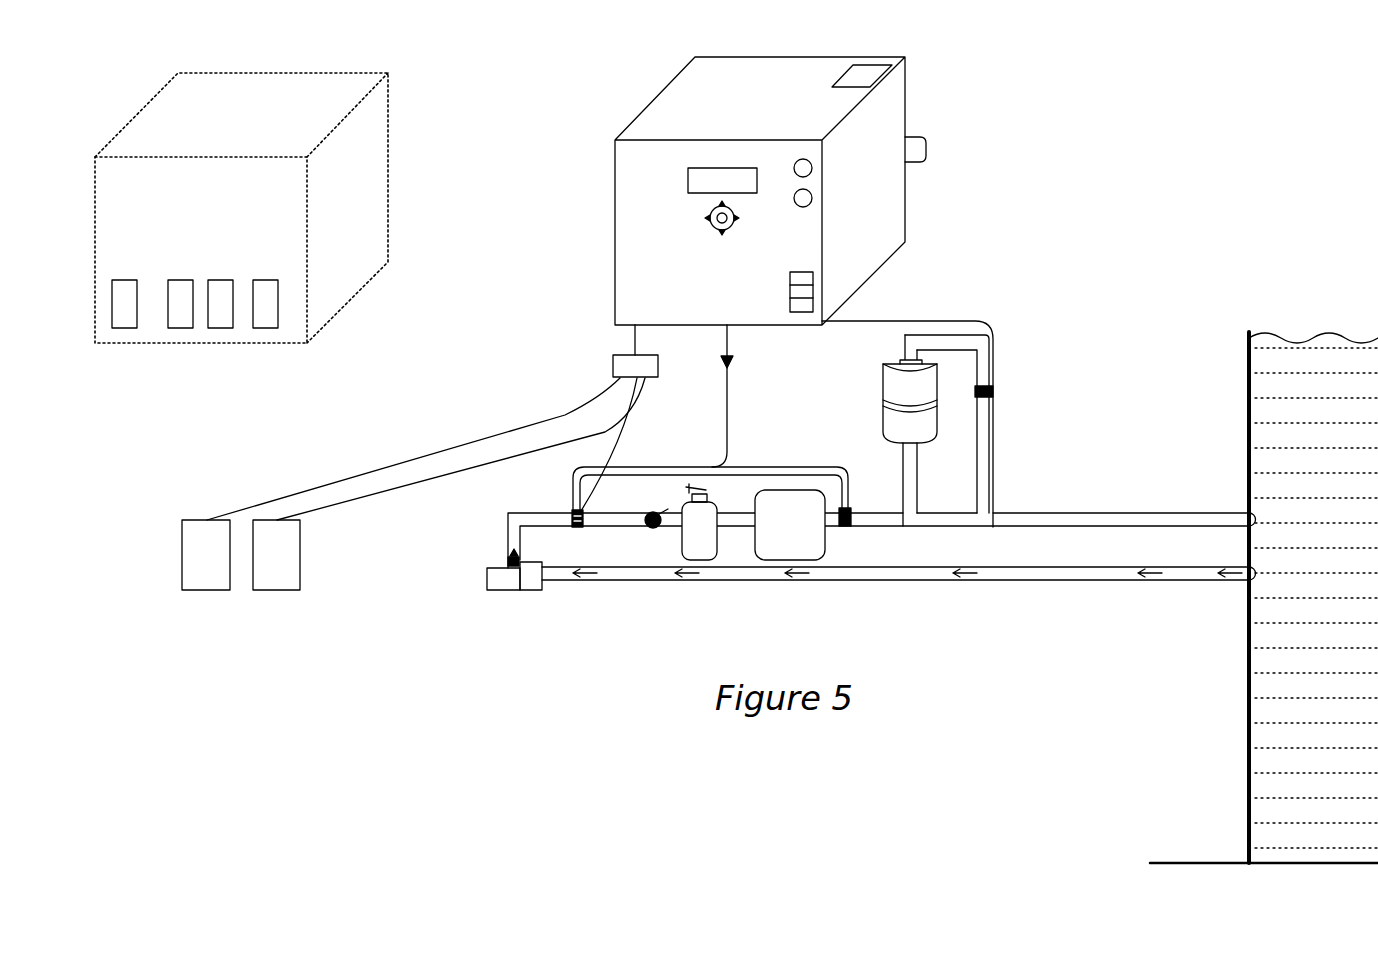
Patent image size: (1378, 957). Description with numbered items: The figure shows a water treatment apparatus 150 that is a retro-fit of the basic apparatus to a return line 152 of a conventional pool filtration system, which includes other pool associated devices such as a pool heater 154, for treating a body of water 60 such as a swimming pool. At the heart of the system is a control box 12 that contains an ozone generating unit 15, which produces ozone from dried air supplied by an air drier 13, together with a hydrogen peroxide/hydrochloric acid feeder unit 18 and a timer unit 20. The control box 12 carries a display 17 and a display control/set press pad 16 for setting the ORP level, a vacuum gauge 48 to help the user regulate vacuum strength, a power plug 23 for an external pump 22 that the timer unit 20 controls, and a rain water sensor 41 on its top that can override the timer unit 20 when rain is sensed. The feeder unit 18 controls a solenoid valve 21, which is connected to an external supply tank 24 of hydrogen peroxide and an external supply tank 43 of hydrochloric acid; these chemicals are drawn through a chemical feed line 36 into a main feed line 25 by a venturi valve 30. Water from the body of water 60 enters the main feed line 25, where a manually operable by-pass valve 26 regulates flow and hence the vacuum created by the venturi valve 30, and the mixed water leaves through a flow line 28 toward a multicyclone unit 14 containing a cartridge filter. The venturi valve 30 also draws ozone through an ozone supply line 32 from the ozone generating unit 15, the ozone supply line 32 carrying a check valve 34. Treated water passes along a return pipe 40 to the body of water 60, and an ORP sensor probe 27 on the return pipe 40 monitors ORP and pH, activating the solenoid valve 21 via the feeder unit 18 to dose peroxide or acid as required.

The control box 12 is at (385, 148).
The air drier 13 is at (180, 328).
The multicyclone unit 14 is at (883, 406).
The ozone generating unit 15 is at (123, 328).
The display control/set press pad 16 is at (713, 226).
The display 17 is at (688, 182).
The hydrogen peroxide/hydrochloric acid feeder unit 18 is at (265, 328).
The timer unit 20 is at (220, 328).
The solenoid valve 21 is at (611, 360).
The external pump 22 is at (493, 592).
The power plug 23 is at (928, 148).
The supply tank 24 is at (200, 592).
The main feed line 25 is at (1040, 582).
The by-pass valve 26 is at (650, 530).
The ORP sensor probe 27 is at (995, 392).
The flow line 28 is at (773, 467).
The venturi valve 30 is at (572, 512).
The ozone supply line 32 is at (727, 398).
The check valve 34 is at (745, 362).
The chemical feed line 36 is at (622, 430).
The return pipe 40 is at (1053, 512).
The rain water sensor 41 is at (868, 75).
The supply tank 43 is at (275, 592).
The vacuum gauge 48 is at (813, 285).
The body of water 60 is at (1249, 406).
The water treatment apparatus 150 is at (1058, 198).
The return line 152 is at (506, 517).
The pool heater 154 is at (828, 547).